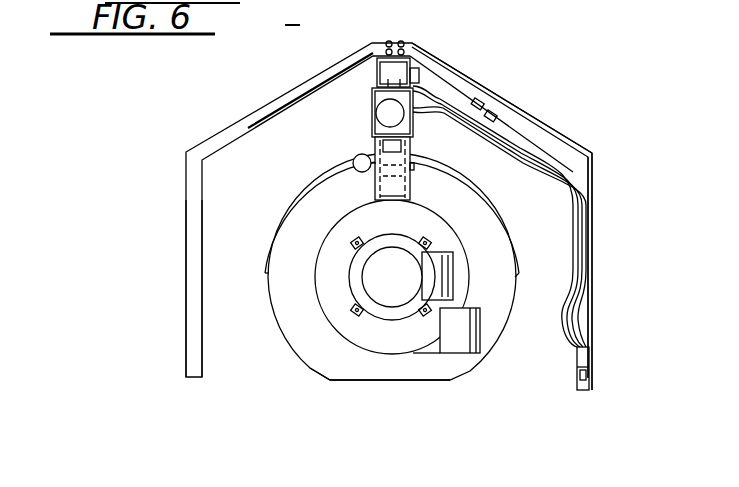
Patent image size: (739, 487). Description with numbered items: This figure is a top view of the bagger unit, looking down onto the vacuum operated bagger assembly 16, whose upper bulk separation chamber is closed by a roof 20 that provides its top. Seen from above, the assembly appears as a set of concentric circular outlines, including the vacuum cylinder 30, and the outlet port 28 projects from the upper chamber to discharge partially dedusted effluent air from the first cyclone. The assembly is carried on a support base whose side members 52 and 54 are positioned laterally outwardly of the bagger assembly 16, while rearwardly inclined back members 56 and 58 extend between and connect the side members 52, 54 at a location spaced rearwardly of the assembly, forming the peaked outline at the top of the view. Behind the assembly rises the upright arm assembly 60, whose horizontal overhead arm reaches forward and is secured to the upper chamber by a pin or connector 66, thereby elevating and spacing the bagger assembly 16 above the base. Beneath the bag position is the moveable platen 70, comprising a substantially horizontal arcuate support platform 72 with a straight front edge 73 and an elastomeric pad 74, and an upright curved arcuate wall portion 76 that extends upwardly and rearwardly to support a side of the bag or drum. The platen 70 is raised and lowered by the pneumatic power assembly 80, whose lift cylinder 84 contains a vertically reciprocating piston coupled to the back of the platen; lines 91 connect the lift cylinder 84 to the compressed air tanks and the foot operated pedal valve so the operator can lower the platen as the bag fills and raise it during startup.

The vacuum operated bagger assembly 16 is at (360, 274).
The roof 20 is at (405, 287).
The outlet port 28 is at (453, 268).
The vacuum cylinder 30 is at (333, 328).
The side member 52 is at (185, 330).
The side member 54 is at (592, 308).
The rearwardly inclined back member 56 is at (244, 118).
The rearwardly inclined back member 58 is at (548, 128).
The upright arm assembly 60 is at (414, 148).
The pin or connector 66 is at (358, 157).
The moveable platen 70 is at (457, 376).
The arcuate support platform 72 is at (316, 372).
The straight front edge 73 is at (346, 381).
The elastomeric pad 74 is at (430, 372).
The upright curved arcuate wall portion 76 is at (487, 189).
The pneumatic power assembly 80 is at (376, 99).
The lift cylinder 84 is at (414, 124).
The lines 91 is at (440, 90).